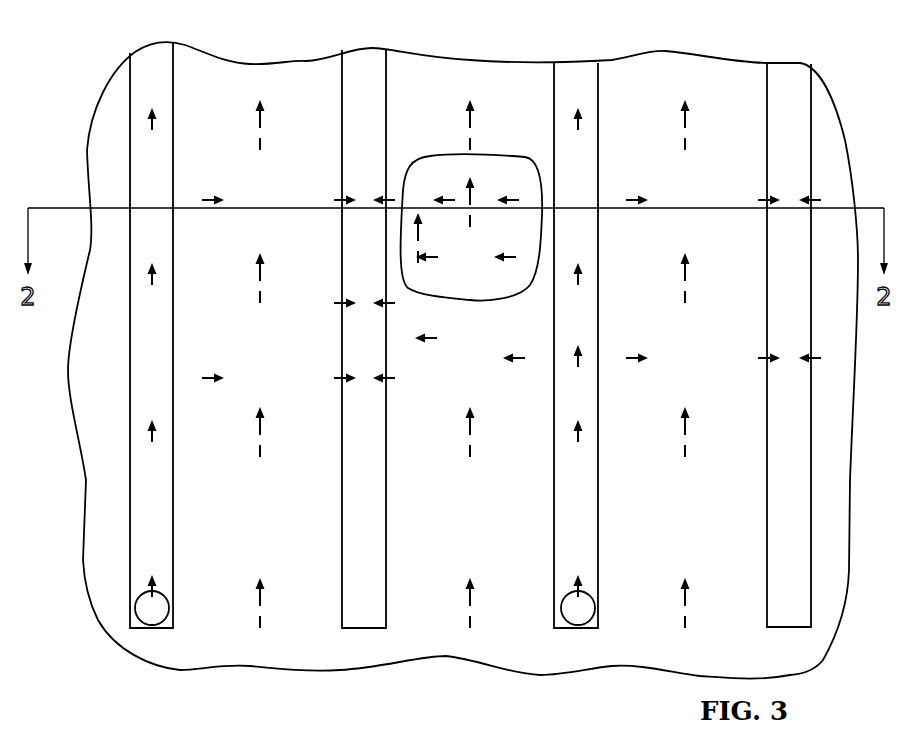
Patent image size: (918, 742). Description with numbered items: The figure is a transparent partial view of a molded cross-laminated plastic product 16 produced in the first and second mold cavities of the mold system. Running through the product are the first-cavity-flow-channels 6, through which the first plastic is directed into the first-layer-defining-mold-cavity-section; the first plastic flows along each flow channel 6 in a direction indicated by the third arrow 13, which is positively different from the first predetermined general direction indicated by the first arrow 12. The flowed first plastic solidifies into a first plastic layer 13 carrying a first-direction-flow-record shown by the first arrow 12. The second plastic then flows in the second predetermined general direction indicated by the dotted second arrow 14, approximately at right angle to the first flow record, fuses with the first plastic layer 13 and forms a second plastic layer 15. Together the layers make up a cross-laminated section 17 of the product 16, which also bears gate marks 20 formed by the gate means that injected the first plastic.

The plastic product 16 is at (233, 54).
The first-cavity-flow-channel 6 is at (588, 496).
The gate marks 20 is at (586, 598).
The cross-laminated section 17 is at (532, 284).
The first plastic layer 13 is at (443, 173).
The first arrow 12 is at (500, 196).
The second arrow 14 is at (473, 206).
The second plastic layer 15 is at (420, 275).